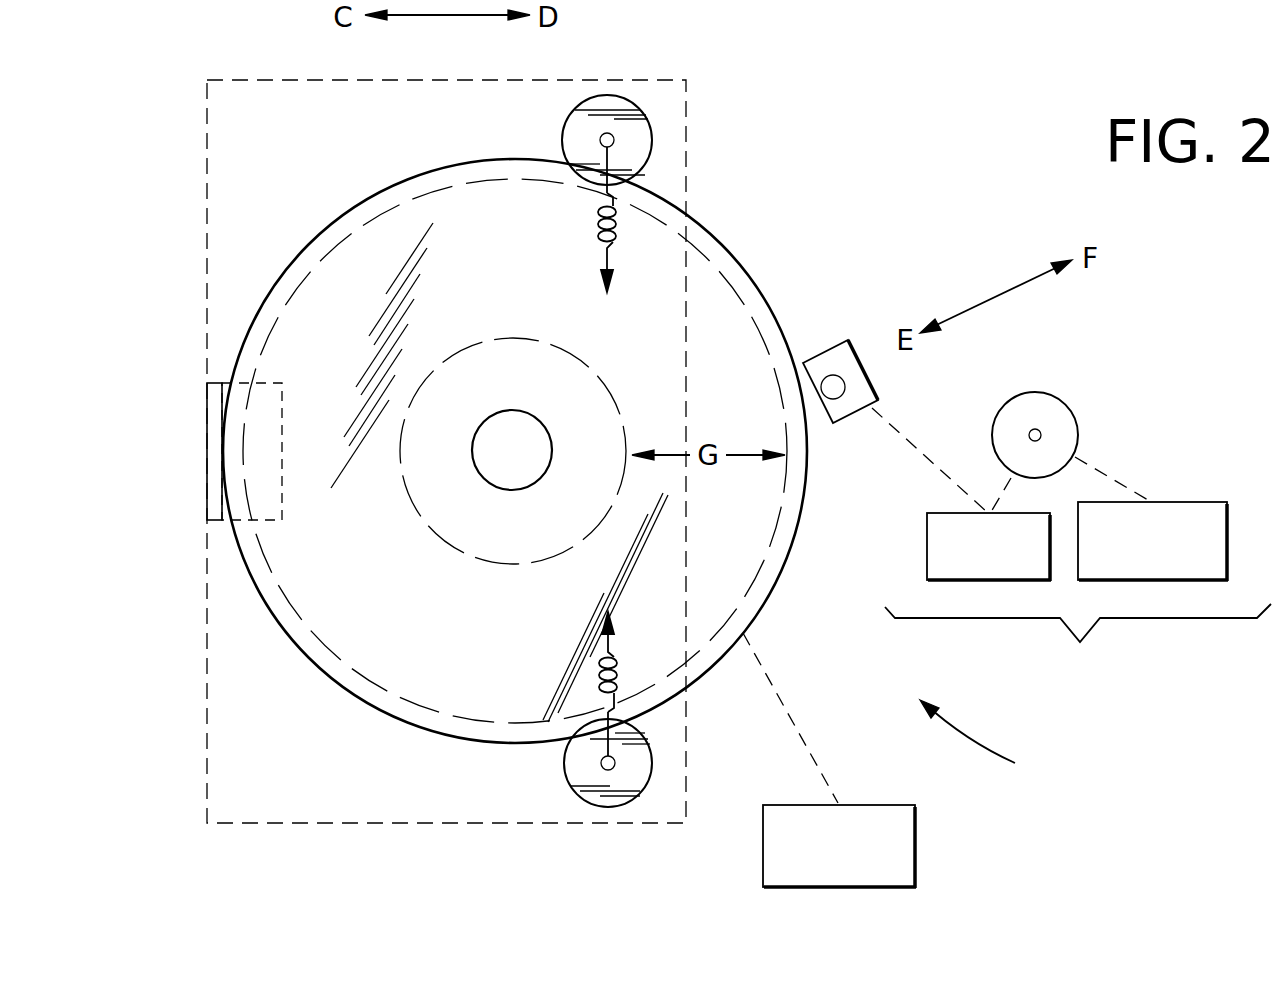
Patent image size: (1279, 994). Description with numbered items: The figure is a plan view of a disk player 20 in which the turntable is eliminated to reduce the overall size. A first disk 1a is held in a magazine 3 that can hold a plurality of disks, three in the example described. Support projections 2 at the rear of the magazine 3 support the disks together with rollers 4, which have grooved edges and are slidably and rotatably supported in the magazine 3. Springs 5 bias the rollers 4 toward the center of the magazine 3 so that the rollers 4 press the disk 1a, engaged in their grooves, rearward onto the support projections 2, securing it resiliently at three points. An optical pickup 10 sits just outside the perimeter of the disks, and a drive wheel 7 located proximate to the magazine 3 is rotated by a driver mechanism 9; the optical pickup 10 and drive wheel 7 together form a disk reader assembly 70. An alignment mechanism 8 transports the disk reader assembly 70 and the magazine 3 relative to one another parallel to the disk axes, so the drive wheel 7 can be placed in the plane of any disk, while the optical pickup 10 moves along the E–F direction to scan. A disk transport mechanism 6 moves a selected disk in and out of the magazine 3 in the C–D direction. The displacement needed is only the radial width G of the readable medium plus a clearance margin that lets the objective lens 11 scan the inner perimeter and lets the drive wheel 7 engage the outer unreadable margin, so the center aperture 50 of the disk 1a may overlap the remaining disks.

The first disk 1a is at (737, 262).
The support projections 2 is at (223, 484).
The magazine 3 is at (279, 824).
The rollers 4 is at (610, 100).
The springs 5 is at (621, 217).
The disk transport mechanism 6 is at (839, 846).
The drive wheel 7 is at (1057, 407).
The alignment mechanism 8 is at (989, 547).
The driver mechanism 9 is at (1153, 541).
The optical pickup 10 is at (833, 342).
The objective lens 11 is at (836, 397).
The disk player 20 is at (992, 744).
The center aperture 50 is at (507, 483).
The disk reader assembly 70 is at (1078, 641).